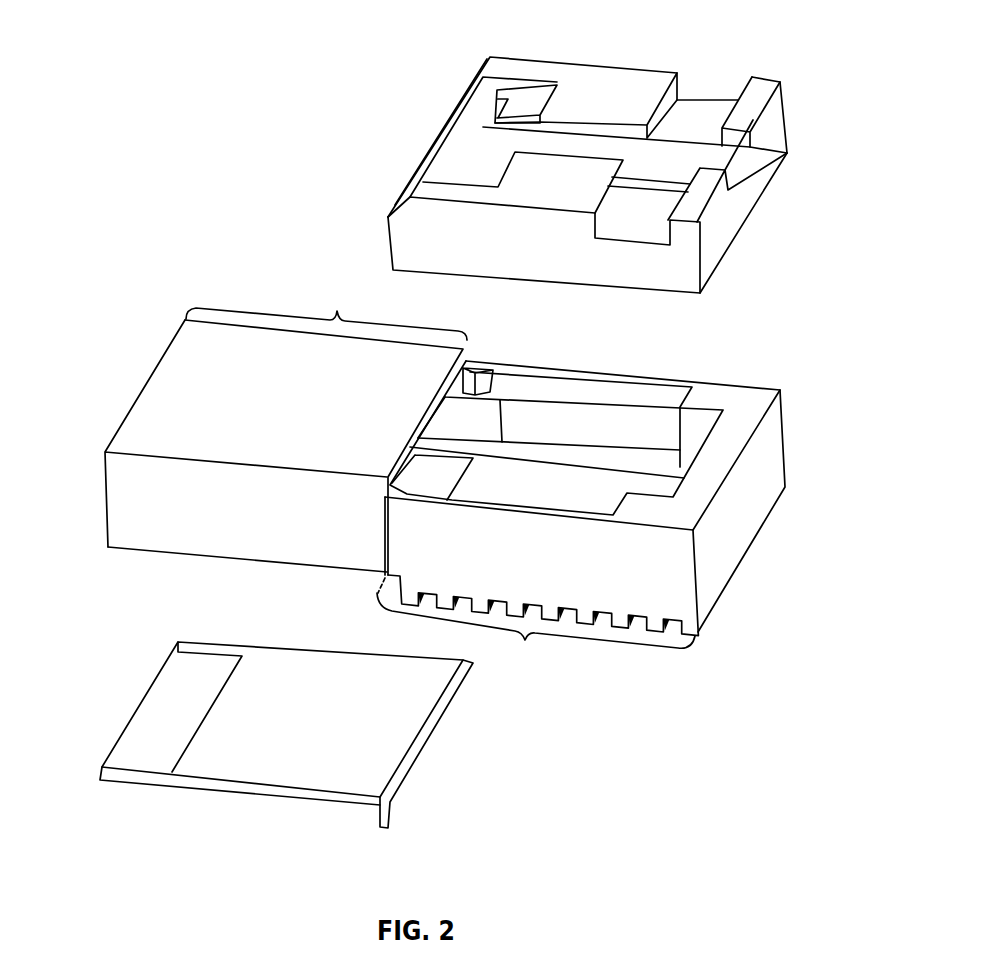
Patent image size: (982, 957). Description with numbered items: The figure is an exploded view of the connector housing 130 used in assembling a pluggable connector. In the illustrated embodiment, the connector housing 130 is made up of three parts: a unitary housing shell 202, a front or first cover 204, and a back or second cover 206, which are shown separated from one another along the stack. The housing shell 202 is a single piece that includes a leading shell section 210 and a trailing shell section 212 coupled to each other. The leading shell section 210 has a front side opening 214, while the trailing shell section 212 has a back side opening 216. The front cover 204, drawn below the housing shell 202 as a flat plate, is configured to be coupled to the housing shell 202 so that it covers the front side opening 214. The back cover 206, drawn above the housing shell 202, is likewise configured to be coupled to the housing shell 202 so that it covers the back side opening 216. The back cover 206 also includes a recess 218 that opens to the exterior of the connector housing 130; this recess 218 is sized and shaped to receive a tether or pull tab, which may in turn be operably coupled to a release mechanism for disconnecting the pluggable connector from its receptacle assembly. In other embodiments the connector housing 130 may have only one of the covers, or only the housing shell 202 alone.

The connector housing 130 is at (195, 72).
The unitary housing shell 202 is at (243, 313).
The front cover 204 is at (111, 809).
The back cover 206 is at (766, 48).
The leading shell section 210 is at (326, 309).
The trailing shell section 212 is at (537, 601).
The front side opening 214 is at (190, 564).
The back side opening 216 is at (653, 421).
The recess 218 is at (600, 131).